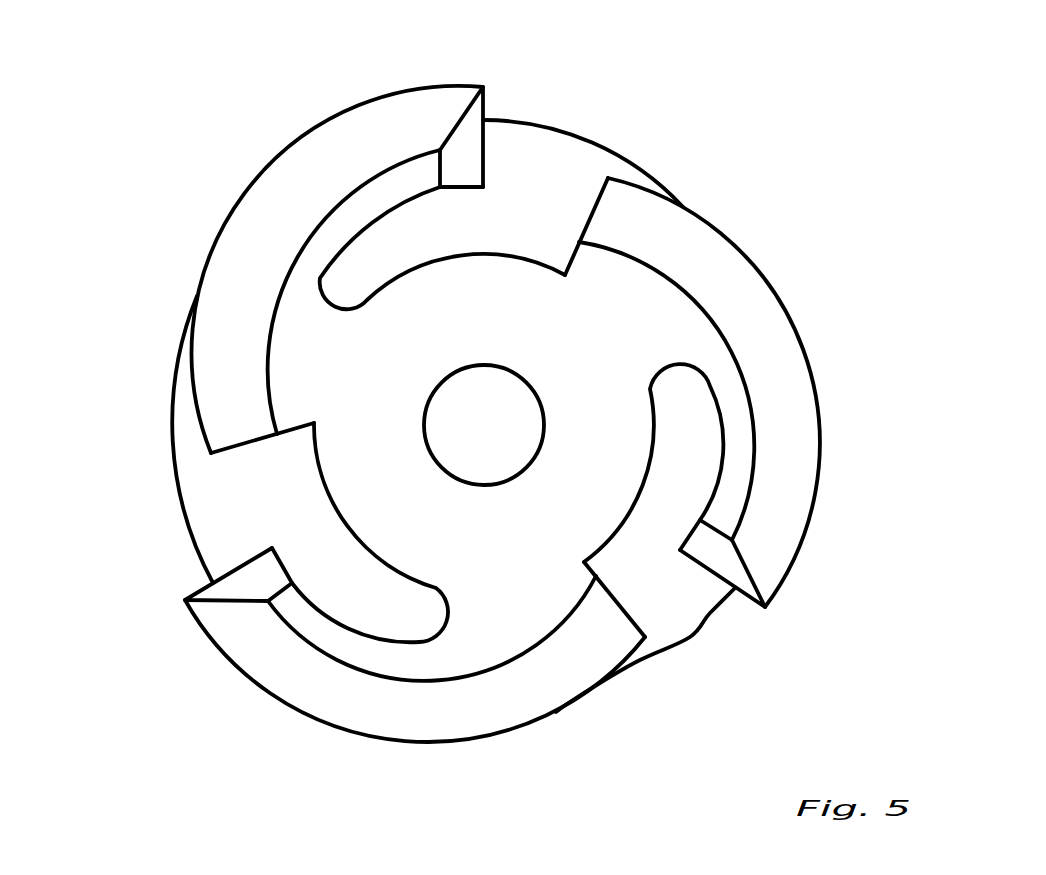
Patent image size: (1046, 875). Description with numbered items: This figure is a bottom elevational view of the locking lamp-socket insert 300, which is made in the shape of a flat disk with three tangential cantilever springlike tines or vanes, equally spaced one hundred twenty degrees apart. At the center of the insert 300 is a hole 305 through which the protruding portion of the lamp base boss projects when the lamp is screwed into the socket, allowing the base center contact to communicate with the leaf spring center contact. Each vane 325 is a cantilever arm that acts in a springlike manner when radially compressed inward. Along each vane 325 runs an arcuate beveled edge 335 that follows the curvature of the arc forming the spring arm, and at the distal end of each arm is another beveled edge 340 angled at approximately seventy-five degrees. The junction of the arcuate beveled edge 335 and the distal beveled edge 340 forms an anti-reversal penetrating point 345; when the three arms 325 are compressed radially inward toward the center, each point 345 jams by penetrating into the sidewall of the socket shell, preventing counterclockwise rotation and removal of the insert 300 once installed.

The lamp-socket insert 300 is at (116, 84).
The hole 305 is at (465, 437).
The vane 325 is at (408, 94).
The arcuate beveled edge 335 is at (340, 152).
The distal beveled edge 340 is at (467, 153).
The anti-reversal penetrating point 345 is at (488, 84).